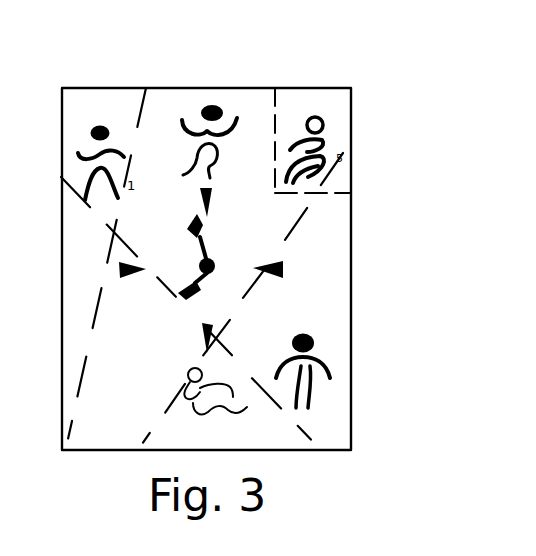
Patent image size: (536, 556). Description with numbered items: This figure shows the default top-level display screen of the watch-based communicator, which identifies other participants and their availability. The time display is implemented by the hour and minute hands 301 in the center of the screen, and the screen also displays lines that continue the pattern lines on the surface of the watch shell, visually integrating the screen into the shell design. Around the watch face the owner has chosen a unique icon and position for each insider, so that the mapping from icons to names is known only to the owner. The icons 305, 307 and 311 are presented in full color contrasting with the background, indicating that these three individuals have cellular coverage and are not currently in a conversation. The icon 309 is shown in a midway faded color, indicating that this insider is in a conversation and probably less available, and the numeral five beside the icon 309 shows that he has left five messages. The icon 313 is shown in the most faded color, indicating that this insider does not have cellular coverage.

The hour and minute hands 301 is at (170, 314).
The insider icon 305 is at (92, 132).
The insider icon 307 is at (200, 107).
The insider icon 309 is at (323, 170).
The insider icon 311 is at (320, 386).
The insider icon 313 is at (189, 399).